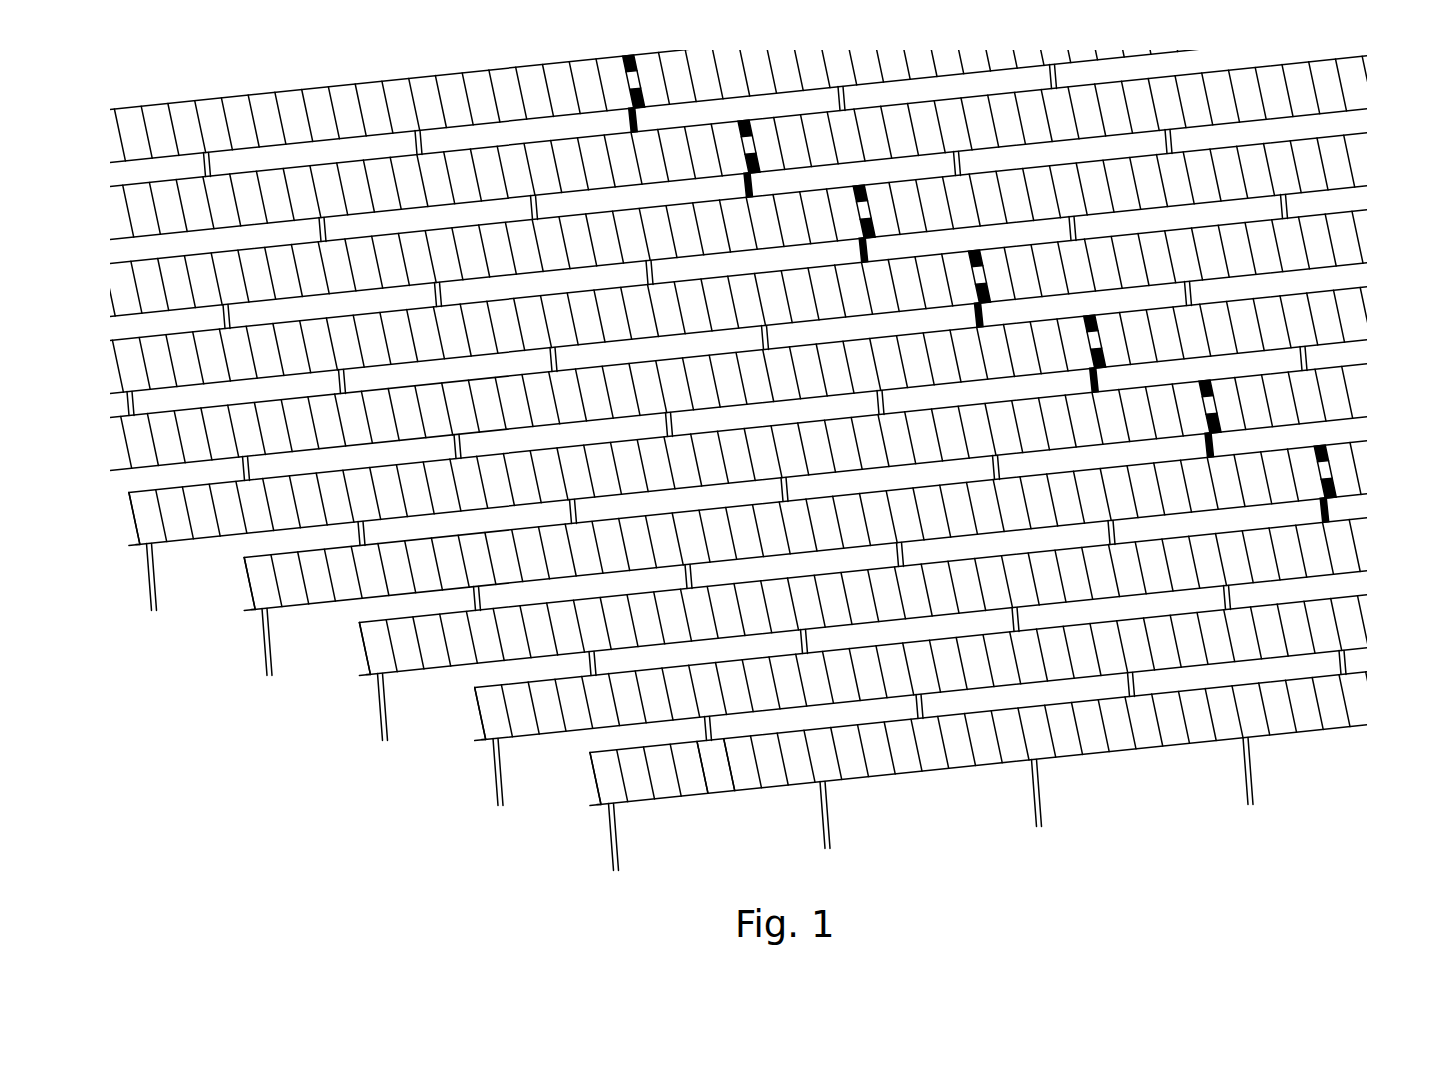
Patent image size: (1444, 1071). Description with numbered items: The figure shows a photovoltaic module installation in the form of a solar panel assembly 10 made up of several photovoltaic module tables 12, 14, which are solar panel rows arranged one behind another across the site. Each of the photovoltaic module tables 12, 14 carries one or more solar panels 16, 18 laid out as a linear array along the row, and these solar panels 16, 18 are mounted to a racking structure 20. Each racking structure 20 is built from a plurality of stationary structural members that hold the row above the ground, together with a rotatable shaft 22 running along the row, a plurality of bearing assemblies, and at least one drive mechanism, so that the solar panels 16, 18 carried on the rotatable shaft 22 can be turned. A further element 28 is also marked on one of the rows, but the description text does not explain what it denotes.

The solar tracker array 10 is at (1357, 123).
The first tracker row 12 is at (250, 604).
The second tracker row 14 is at (368, 666).
The solar module 16 is at (717, 773).
The torque tube 18 is at (878, 765).
The support post 20 is at (1253, 765).
The tracker row 22 is at (598, 779).
The drive unit 28 is at (1325, 470).